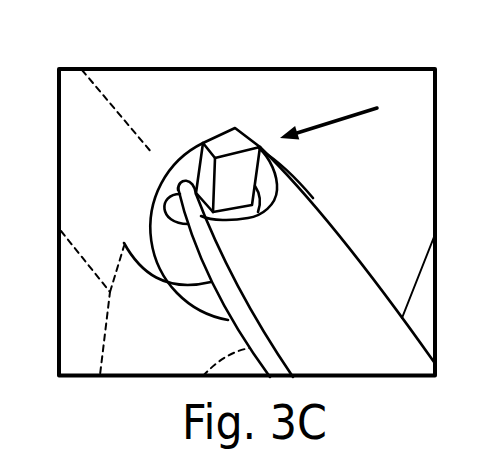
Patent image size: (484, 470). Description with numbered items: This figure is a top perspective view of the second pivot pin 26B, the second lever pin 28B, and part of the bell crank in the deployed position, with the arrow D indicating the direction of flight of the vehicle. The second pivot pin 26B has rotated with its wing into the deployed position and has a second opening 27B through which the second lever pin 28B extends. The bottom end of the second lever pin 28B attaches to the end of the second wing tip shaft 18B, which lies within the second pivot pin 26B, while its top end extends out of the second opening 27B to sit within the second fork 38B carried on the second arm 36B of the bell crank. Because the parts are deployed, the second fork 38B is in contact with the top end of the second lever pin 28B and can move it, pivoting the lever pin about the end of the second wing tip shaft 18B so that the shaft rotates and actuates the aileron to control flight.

The second wing tip shaft 18B is at (78, 120).
The second pivot pin 26B is at (172, 160).
The second opening 27B is at (163, 208).
The second lever pin 28B is at (235, 138).
The second arm 36B is at (310, 255).
The second fork 38B is at (278, 170).
The direction of flight D is at (339, 117).